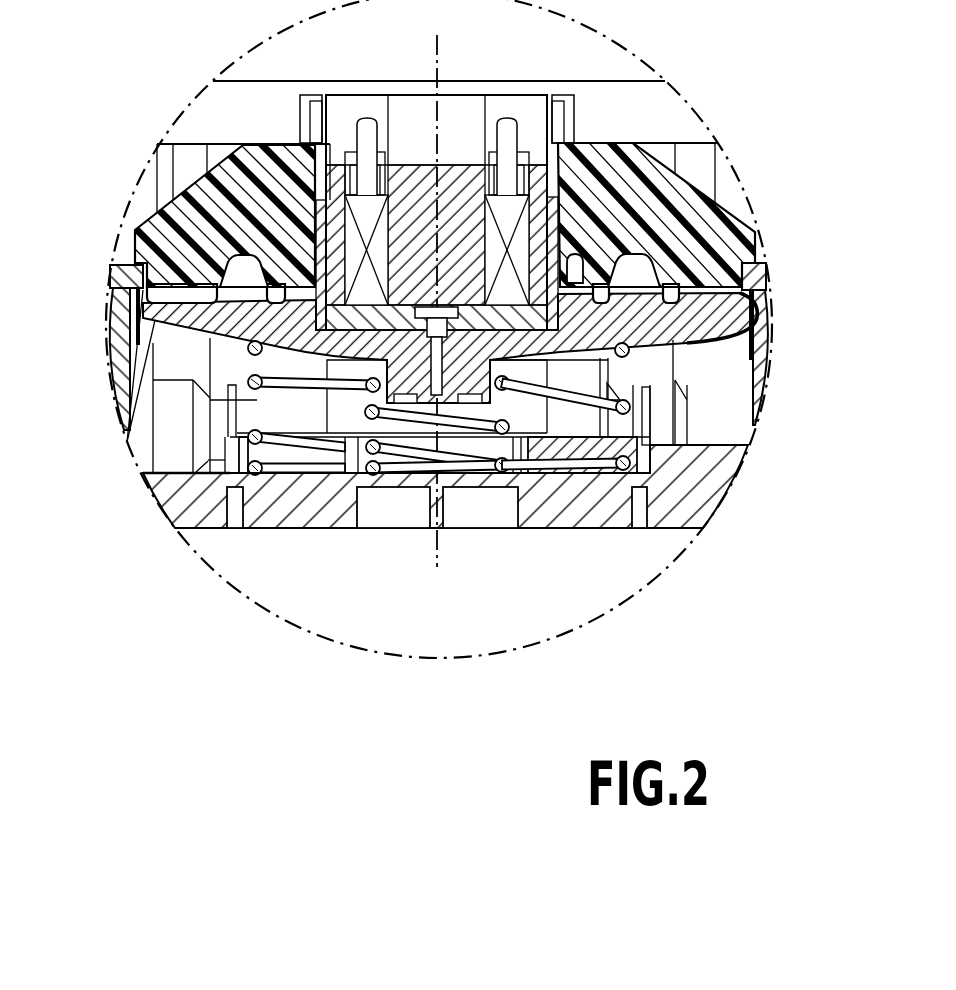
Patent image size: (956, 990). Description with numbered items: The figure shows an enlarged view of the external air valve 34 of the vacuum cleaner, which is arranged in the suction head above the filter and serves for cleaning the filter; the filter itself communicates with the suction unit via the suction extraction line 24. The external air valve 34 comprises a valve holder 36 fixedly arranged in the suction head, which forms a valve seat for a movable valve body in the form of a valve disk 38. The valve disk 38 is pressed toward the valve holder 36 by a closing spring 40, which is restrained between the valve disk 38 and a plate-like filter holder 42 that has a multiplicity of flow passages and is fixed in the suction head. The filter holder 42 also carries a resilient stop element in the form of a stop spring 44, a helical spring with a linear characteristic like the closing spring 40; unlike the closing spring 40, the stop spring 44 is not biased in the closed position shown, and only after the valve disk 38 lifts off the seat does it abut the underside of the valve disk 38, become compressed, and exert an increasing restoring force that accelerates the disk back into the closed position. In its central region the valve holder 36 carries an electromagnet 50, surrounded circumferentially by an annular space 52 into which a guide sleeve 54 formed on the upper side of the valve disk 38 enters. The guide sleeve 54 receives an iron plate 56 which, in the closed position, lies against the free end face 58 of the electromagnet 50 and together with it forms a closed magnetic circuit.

The suction extraction line 24 is at (178, 430).
The external air valve 34 is at (735, 172).
The valve holder 36 is at (758, 238).
The valve disk 38 is at (680, 333).
The closing spring 40 is at (603, 477).
The filter holder 42 is at (692, 503).
The stop spring 44 is at (385, 450).
The electromagnet 50 is at (506, 196).
The annular space 52 is at (233, 185).
The guide sleeve 54 is at (153, 217).
The iron plate 56 is at (347, 317).
The free end face 58 is at (560, 352).